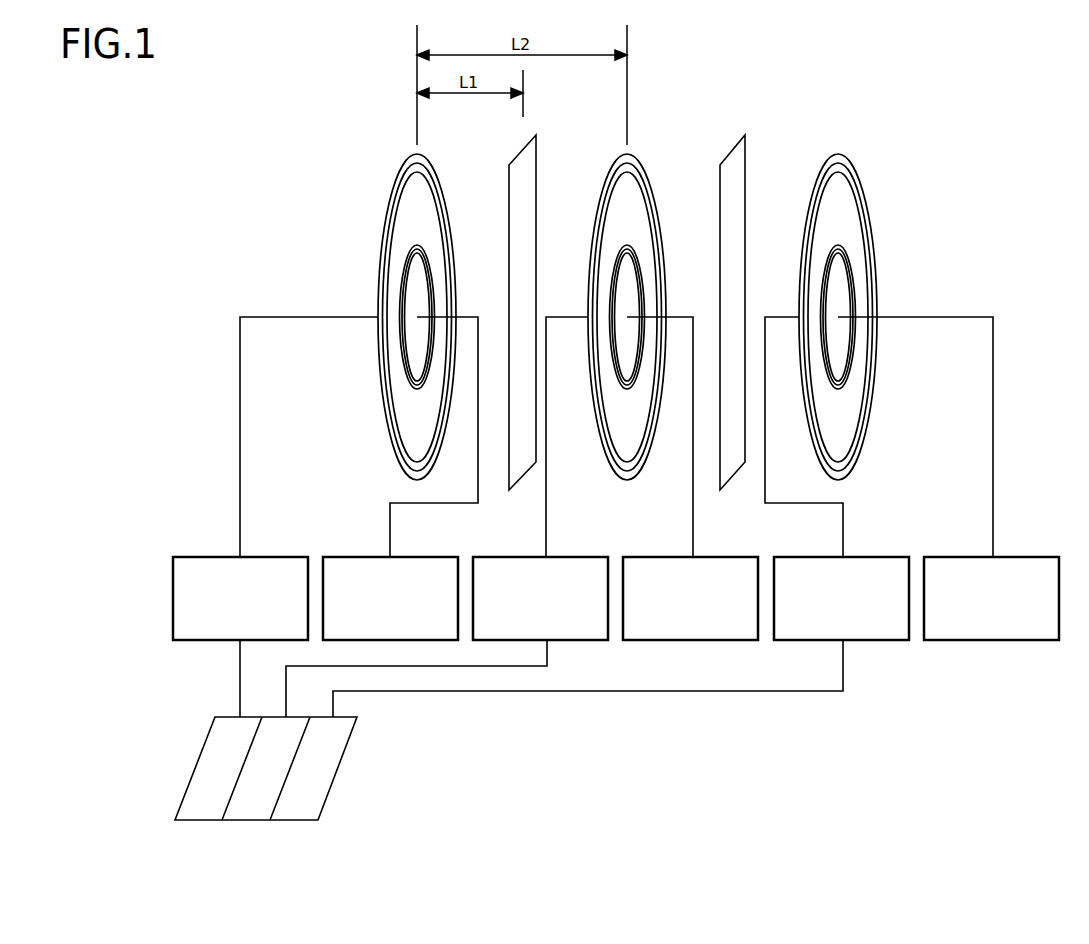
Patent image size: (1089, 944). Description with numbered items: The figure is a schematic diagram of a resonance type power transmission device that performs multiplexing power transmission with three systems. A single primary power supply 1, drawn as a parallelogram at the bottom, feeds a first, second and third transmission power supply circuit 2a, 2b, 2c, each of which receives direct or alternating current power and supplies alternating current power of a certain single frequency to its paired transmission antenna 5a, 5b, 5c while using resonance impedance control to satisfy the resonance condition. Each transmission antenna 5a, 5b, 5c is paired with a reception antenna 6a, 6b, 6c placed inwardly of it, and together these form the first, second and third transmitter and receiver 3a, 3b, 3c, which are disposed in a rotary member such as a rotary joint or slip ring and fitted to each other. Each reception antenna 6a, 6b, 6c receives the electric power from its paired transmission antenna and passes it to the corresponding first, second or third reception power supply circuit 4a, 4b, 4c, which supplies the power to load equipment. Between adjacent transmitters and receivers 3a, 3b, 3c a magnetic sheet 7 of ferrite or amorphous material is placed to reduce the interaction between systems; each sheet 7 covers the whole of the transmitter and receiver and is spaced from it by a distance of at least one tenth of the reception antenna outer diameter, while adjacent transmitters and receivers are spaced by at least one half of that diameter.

The primary power supply 1 is at (327, 797).
The first transmission power supply circuit 2a is at (275, 557).
The second transmission power supply circuit 2b is at (575, 557).
The third transmission power supply circuit 2c is at (865, 557).
The first transmitter and receiver 3a is at (371, 317).
The second transmitter and receiver 3b is at (659, 276).
The third transmitter and receiver 3c is at (885, 308).
The first reception power supply circuit 4a is at (378, 557).
The second reception power supply circuit 4b is at (715, 557).
The third reception power supply circuit 4c is at (1020, 557).
The first transmission antenna 5a is at (395, 183).
The second transmission antenna 5b is at (643, 170).
The third transmission antenna 5c is at (865, 200).
The first reception antenna 6a is at (382, 314).
The second reception antenna 6b is at (648, 271).
The third reception antenna 6c is at (875, 301).
The magnetic sheet 7 is at (538, 152).